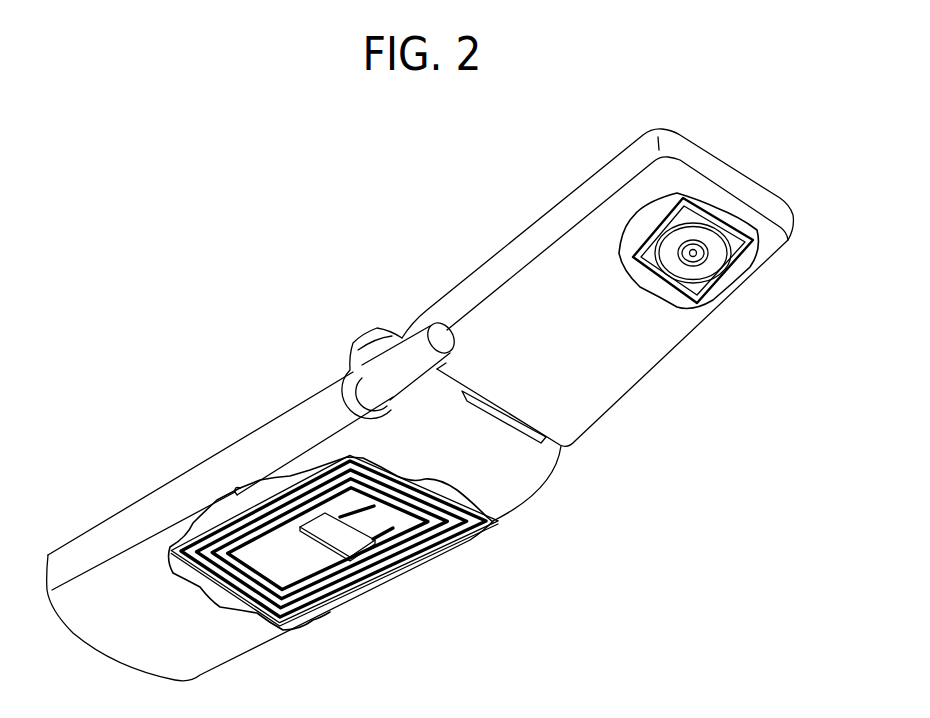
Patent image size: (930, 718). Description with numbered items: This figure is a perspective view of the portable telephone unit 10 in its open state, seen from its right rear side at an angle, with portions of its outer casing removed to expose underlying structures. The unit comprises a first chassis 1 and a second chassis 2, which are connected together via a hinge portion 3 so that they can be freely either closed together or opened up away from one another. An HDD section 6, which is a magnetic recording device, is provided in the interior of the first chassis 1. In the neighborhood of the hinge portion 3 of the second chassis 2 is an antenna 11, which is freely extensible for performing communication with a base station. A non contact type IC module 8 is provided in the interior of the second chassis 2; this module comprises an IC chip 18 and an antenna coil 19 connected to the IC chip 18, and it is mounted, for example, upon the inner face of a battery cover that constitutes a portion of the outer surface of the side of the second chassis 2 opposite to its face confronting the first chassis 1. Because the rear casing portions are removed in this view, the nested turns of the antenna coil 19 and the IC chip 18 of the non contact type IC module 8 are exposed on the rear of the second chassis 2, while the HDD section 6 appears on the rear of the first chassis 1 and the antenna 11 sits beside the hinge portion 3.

The portable telephone unit 10 is at (341, 290).
The first chassis 1 is at (520, 224).
The second chassis 2 is at (187, 455).
The hinge portion 3 is at (358, 350).
The antenna 11 is at (445, 324).
The HDD section 6 is at (716, 263).
The non contact type IC module 8 is at (396, 500).
The IC chip 18 is at (333, 537).
The antenna coil 19 is at (263, 577).